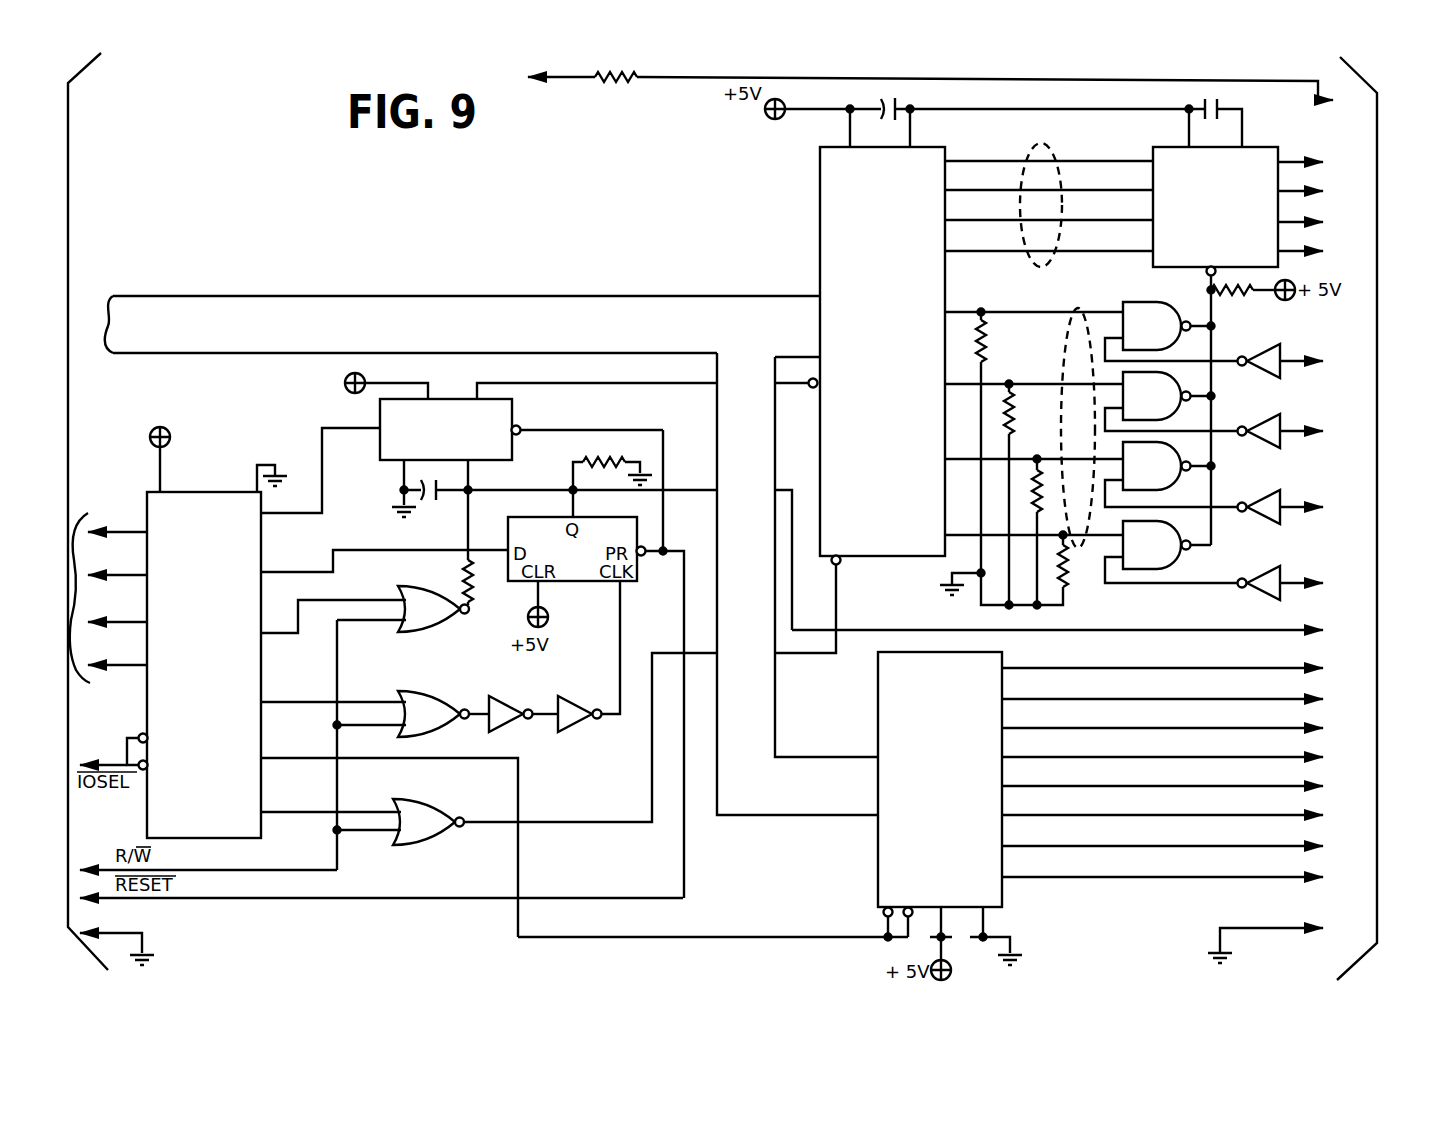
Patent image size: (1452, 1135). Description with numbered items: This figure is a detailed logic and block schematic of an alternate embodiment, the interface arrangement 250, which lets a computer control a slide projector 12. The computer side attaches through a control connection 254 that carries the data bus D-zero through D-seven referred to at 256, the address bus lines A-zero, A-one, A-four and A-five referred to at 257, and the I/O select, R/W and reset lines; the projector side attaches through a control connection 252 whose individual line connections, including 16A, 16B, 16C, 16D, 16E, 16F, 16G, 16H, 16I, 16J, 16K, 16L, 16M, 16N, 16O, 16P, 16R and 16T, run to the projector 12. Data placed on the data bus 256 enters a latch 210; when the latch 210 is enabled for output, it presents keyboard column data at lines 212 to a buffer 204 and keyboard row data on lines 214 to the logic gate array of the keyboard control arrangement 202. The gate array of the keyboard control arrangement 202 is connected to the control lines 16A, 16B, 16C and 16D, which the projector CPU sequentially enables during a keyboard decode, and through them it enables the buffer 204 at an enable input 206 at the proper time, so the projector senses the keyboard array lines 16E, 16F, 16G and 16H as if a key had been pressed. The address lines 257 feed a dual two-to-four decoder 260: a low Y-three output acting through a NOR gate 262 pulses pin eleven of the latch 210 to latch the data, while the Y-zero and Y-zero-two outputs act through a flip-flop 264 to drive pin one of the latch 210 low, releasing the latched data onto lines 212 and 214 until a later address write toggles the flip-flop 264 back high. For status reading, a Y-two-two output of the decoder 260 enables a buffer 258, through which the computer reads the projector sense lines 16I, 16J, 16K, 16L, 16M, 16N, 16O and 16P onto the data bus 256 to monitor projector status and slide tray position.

The projector 12 is at (1412, 288).
The control line 16A is at (1328, 361).
The control line 16B is at (1328, 431).
The control line 16C is at (1328, 507).
The control line 16D is at (1329, 580).
The keyboard array line 16E is at (1326, 162).
The keyboard array line 16F is at (1325, 191).
The keyboard array line 16G is at (1328, 222).
The keyboard array line 16H is at (1328, 251).
The sense line 16I is at (1185, 841).
The sense line 16J is at (1185, 872).
The sense line 16K is at (1190, 663).
The sense line 16L is at (1189, 694).
The sense line 16M is at (1192, 723).
The sense line 16N is at (1191, 752).
The sense line 16O is at (1192, 781).
The sense line 16P is at (1189, 810).
The line connection 16R is at (1085, 626).
The line connection 16T is at (1351, 101).
The keyboard control arrangement 202 is at (1132, 436).
The buffer 204 is at (1272, 147).
The enable input 206 is at (1205, 306).
The latch 210 is at (819, 215).
The data lines 212 is at (1033, 160).
The lines 214 is at (1060, 376).
The interface arrangement 250 is at (642, 153).
The control connection 252 is at (1362, 70).
The control connection 254 is at (75, 932).
The data bus 256 is at (371, 273).
The address lines 257 is at (106, 581).
The buffer 258 is at (878, 846).
The decoder 260 is at (178, 491).
The NOR gate 262 is at (405, 845).
The flip-flop 264 is at (515, 411).